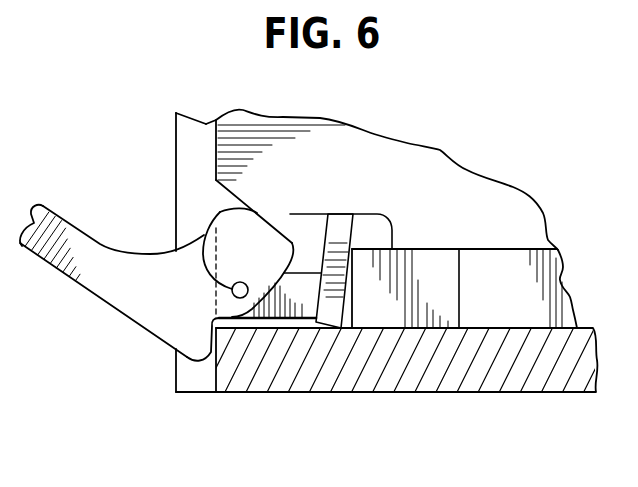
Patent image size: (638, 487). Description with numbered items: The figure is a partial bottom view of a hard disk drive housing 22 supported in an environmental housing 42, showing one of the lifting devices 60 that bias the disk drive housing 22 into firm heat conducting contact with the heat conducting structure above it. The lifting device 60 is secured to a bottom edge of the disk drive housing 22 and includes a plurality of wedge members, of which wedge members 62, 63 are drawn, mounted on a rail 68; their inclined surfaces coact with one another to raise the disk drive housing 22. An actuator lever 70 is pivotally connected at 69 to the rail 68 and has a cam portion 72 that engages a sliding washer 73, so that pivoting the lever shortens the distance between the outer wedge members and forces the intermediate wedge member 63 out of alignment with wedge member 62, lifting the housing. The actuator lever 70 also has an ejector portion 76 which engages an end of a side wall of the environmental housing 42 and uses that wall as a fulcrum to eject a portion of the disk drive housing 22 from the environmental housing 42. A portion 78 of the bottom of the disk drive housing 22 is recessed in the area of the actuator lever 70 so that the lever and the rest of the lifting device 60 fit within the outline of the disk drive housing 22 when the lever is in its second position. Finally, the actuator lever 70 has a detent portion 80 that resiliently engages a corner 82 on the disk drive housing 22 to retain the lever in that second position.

The disk drive housing 22 is at (428, 163).
The environmental housing 42 is at (537, 383).
The lifting device 60 is at (481, 240).
The wedge member 62 is at (418, 268).
The wedge member 63 is at (515, 267).
The rail 68 is at (289, 318).
The pivotal connection 69 is at (232, 288).
The actuator lever 70 is at (143, 308).
The cam portion 72 is at (294, 243).
The sliding washer 73 is at (340, 211).
The ejector portion 76 is at (210, 357).
The recessed portion 78 is at (183, 133).
The detent portion 80 is at (220, 208).
The corner 82 is at (257, 210).